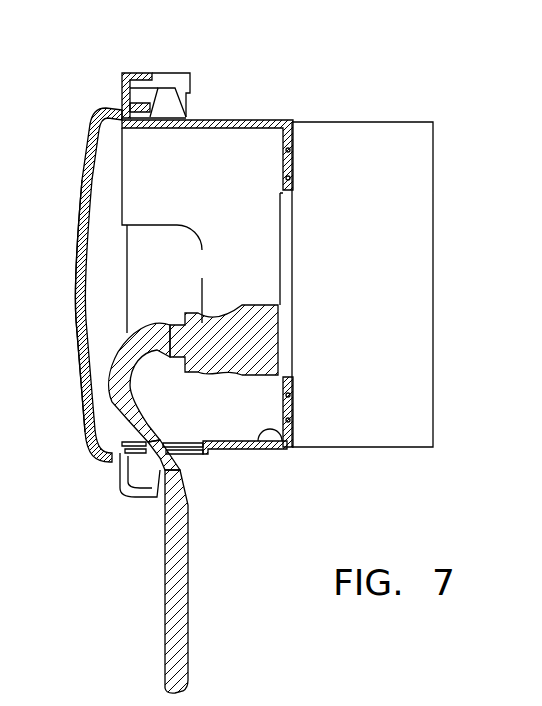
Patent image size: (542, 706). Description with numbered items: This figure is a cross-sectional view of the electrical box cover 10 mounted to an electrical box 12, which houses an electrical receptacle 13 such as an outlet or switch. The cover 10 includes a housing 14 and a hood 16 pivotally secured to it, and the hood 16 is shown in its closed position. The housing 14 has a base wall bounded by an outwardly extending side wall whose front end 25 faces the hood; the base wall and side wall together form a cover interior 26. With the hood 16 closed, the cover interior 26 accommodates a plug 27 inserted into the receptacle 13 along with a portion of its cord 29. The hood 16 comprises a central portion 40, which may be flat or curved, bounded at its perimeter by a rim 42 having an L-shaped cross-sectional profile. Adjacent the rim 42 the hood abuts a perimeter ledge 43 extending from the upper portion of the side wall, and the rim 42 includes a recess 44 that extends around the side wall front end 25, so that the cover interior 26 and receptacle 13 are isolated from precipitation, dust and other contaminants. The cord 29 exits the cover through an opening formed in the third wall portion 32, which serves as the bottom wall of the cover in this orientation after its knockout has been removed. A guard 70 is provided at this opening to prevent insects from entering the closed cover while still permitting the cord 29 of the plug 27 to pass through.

The electrical box cover 10 is at (254, 122).
The electrical box 12 is at (434, 143).
The electrical receptacle 13 is at (288, 268).
The housing 14 is at (242, 448).
The hood 16 is at (82, 412).
The front end 25 is at (147, 128).
The cover interior 26 is at (100, 228).
The plug 27 is at (170, 322).
The cord 29 is at (163, 522).
The third wall portion 32 is at (278, 441).
The central portion 40 is at (83, 143).
The rim 42 is at (123, 78).
The perimeter ledge 43 is at (180, 112).
The recess 44 is at (140, 85).
The guard 70 is at (188, 505).